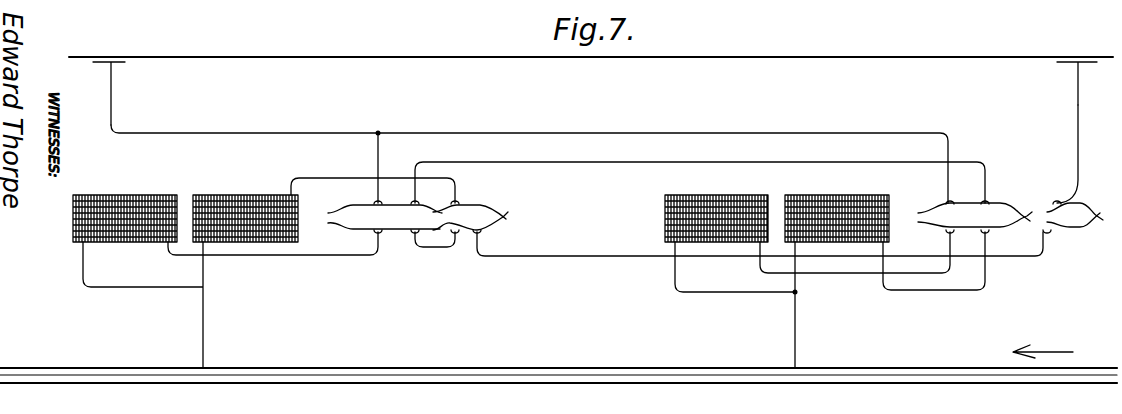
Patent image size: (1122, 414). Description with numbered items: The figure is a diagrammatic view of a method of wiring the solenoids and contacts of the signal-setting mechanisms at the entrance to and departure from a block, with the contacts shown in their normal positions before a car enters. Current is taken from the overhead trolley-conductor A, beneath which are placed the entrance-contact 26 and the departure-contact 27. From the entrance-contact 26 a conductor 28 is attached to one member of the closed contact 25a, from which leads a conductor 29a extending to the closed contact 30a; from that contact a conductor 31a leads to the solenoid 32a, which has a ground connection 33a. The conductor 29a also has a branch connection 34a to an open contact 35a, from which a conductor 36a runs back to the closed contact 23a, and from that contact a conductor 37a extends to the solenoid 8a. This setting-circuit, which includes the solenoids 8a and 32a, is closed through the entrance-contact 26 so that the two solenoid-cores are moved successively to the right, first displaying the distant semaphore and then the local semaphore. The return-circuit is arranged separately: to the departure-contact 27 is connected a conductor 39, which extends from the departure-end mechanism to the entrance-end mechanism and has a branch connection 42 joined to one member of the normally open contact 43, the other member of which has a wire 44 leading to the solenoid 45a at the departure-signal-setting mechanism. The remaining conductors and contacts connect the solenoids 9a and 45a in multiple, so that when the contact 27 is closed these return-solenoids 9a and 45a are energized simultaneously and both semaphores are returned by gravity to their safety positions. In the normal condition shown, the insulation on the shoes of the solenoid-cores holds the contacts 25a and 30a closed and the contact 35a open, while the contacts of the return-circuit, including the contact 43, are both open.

The overhead trolley-conductor A is at (785, 57).
The departure-contact 27 is at (123, 63).
The conductor 39 is at (290, 133).
The branch connection 42 is at (376, 154).
The conductor 31a is at (385, 175).
The conductor 36a is at (590, 163).
The solenoid 45a is at (143, 196).
The solenoid 32a is at (255, 196).
The solenoid 9a is at (740, 196).
The solenoid 8a is at (866, 196).
The wire 44 is at (295, 259).
The ground connection 33a is at (203, 313).
The normally open contact 43 is at (385, 226).
The closed contact 30a is at (488, 230).
The open contact 35a is at (470, 229).
The branch connection 34a is at (443, 247).
The conductor 29a is at (562, 257).
The conductor 37a is at (937, 293).
The closed contact 23a is at (1012, 203).
The closed contact 25a is at (1075, 205).
The entrance-contact 26 is at (1093, 62).
The conductor 28 is at (1078, 147).